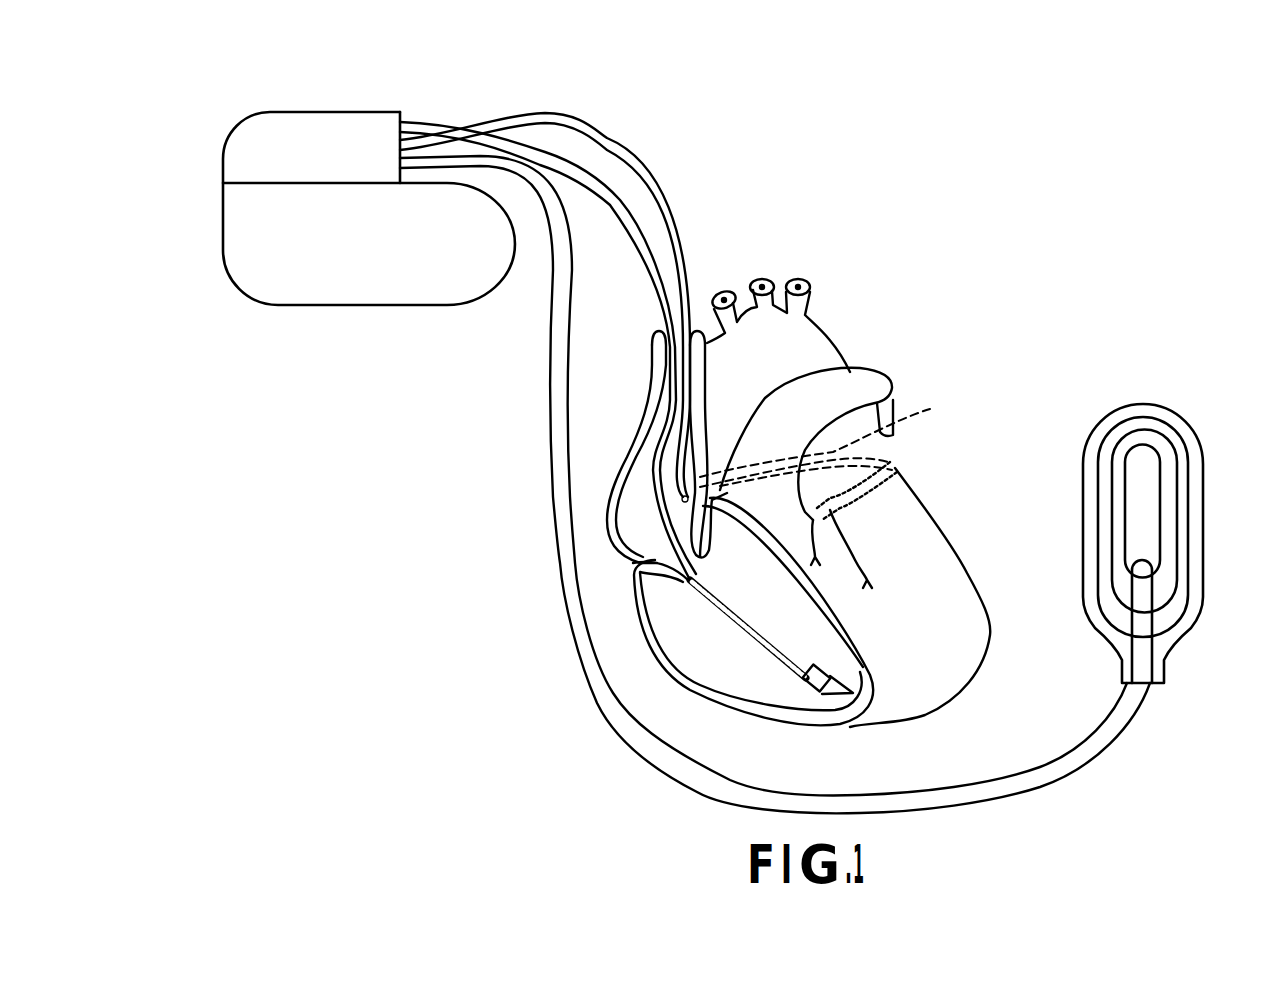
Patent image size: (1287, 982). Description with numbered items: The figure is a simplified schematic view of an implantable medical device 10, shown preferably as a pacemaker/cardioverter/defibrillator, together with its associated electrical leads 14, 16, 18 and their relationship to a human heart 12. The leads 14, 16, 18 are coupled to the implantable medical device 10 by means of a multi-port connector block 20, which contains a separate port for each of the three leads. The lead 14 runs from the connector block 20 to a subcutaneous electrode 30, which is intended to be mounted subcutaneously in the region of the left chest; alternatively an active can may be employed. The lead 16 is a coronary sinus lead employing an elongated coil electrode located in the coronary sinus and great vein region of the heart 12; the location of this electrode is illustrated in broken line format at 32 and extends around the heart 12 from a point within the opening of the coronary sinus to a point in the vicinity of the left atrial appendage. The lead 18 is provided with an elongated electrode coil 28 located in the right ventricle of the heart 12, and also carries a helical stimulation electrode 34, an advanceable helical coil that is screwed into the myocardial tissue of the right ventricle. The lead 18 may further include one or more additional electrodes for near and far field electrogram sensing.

The implantable medical device 10 is at (323, 288).
The multi-port connector block 20 is at (352, 106).
The lead 14 is at (560, 333).
The coronary sinus lead 16 is at (608, 142).
The lead 18 is at (616, 200).
The human heart 12 is at (727, 620).
The elongated electrode coil 28 is at (817, 683).
The helical stimulation electrode 34 is at (853, 695).
The subcutaneous electrode 30 is at (1177, 427).
The coronary sinus electrode location 32 is at (833, 435).